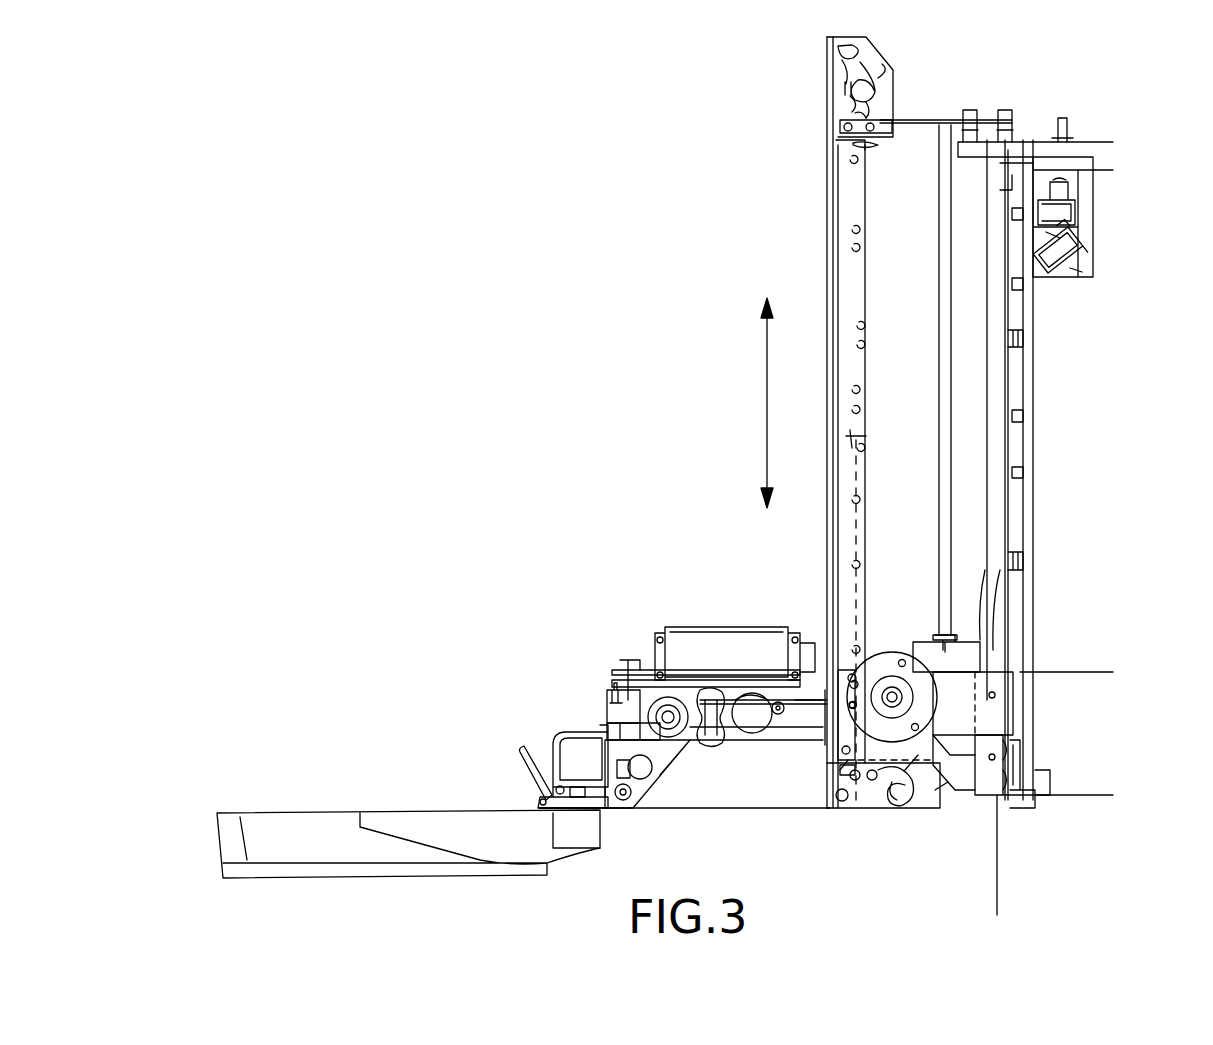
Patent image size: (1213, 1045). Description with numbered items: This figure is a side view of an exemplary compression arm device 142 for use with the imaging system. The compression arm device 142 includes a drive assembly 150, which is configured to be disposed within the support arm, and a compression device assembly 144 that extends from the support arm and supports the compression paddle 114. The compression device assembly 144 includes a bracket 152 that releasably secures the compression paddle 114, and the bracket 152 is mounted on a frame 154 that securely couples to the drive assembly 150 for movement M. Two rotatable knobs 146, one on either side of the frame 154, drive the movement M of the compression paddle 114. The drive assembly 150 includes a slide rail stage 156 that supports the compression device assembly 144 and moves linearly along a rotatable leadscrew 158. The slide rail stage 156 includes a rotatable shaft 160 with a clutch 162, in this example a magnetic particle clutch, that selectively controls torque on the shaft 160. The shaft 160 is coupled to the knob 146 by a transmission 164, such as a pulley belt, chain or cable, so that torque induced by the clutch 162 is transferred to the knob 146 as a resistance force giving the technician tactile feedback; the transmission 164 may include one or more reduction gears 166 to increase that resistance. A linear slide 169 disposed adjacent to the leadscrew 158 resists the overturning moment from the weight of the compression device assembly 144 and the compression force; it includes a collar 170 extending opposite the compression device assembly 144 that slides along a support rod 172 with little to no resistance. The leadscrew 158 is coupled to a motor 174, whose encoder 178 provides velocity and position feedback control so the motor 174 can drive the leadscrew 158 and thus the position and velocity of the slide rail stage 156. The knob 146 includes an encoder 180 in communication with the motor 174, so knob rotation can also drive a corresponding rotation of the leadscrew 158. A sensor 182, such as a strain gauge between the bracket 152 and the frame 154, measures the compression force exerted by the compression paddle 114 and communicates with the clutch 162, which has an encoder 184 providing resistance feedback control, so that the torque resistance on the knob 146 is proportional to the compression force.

The compression paddle 114 is at (306, 815).
The compression arm device 142 is at (244, 201).
The compression device assembly 144 is at (549, 658).
The rotatable knob 146 is at (668, 732).
The drive assembly 150 is at (1103, 98).
The bracket 152 is at (563, 735).
The frame 154 is at (702, 740).
The slide rail stage 156 is at (976, 629).
The leadscrew 158 is at (943, 243).
The shaft 160 is at (887, 690).
The clutch 162 is at (914, 738).
The transmission 164 is at (783, 726).
The reduction gear 166 is at (778, 705).
The linear slide 169 is at (1020, 672).
The collar 170 is at (1005, 703).
The support rod 172 is at (1000, 300).
The motor 174 is at (1093, 203).
The encoder 178 is at (1080, 264).
The encoder 180 is at (668, 712).
The sensor 182 is at (615, 700).
The encoder 184 is at (878, 712).
The movement M is at (765, 402).